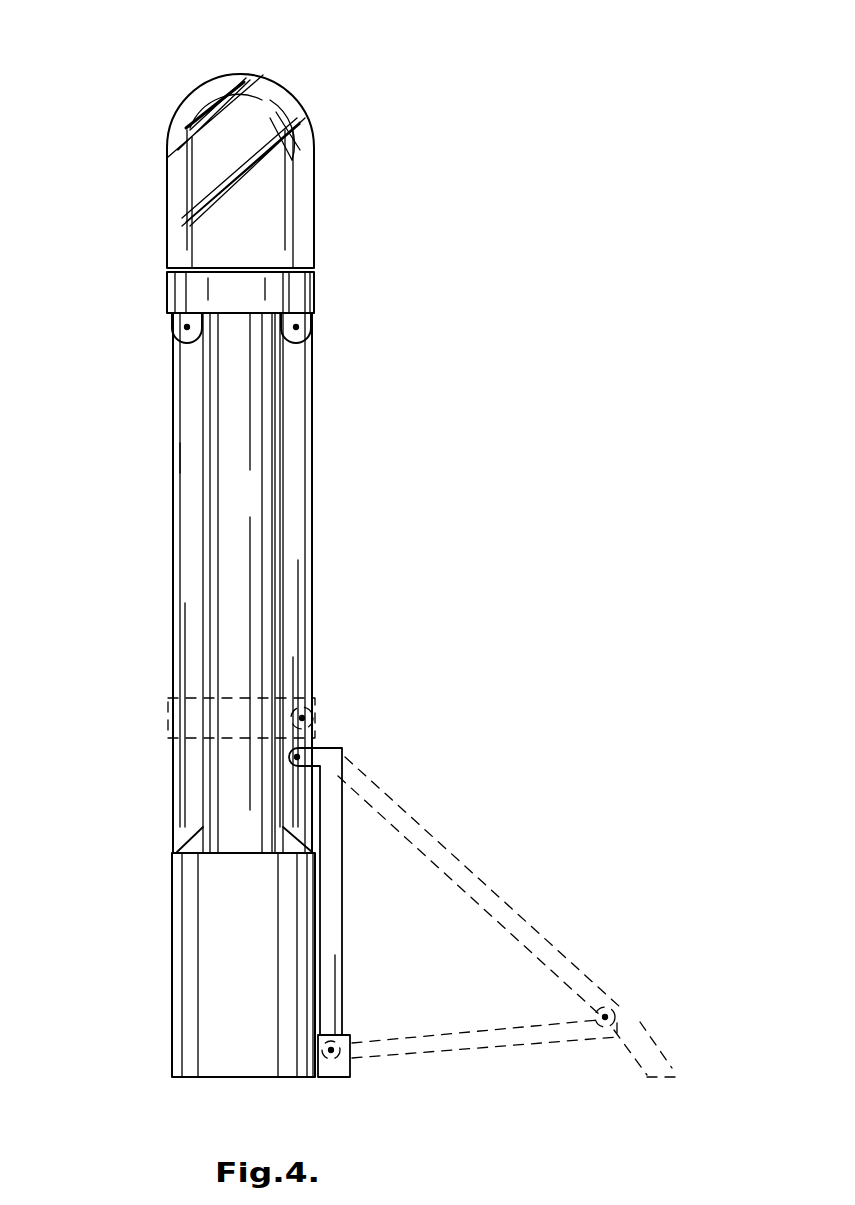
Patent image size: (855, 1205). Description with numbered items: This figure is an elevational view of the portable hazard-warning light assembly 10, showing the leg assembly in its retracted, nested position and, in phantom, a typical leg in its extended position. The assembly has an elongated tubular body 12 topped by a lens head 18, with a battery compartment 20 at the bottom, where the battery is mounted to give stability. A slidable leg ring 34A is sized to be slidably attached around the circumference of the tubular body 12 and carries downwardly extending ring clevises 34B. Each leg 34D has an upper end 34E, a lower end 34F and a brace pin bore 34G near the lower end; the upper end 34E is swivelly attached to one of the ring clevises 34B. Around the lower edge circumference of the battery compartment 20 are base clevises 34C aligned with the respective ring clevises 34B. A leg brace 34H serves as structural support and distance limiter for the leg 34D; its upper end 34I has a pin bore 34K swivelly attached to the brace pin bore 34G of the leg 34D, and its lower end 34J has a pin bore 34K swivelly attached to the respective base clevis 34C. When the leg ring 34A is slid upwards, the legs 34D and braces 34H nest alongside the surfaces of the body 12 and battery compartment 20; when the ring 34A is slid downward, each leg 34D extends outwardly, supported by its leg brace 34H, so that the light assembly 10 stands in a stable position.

The portable hazard-warning light assembly 10 is at (104, 76).
The lens head 18 is at (275, 178).
The elongated tubular body 12 is at (240, 482).
The battery compartment 20 is at (213, 968).
The slidable leg ring 34A is at (288, 297).
The ring clevis 34B is at (300, 333).
The base clevis 34C is at (350, 1076).
The leg 34D is at (185, 470).
The upper end of leg 34E is at (298, 348).
The lower end of leg 34F is at (195, 826).
The brace pin bore 34G is at (185, 327).
The leg brace 34H is at (476, 1012).
The upper end of leg brace 34I is at (608, 1008).
The lower end of leg brace 34J is at (336, 1040).
The pin bore 34K is at (533, 898).